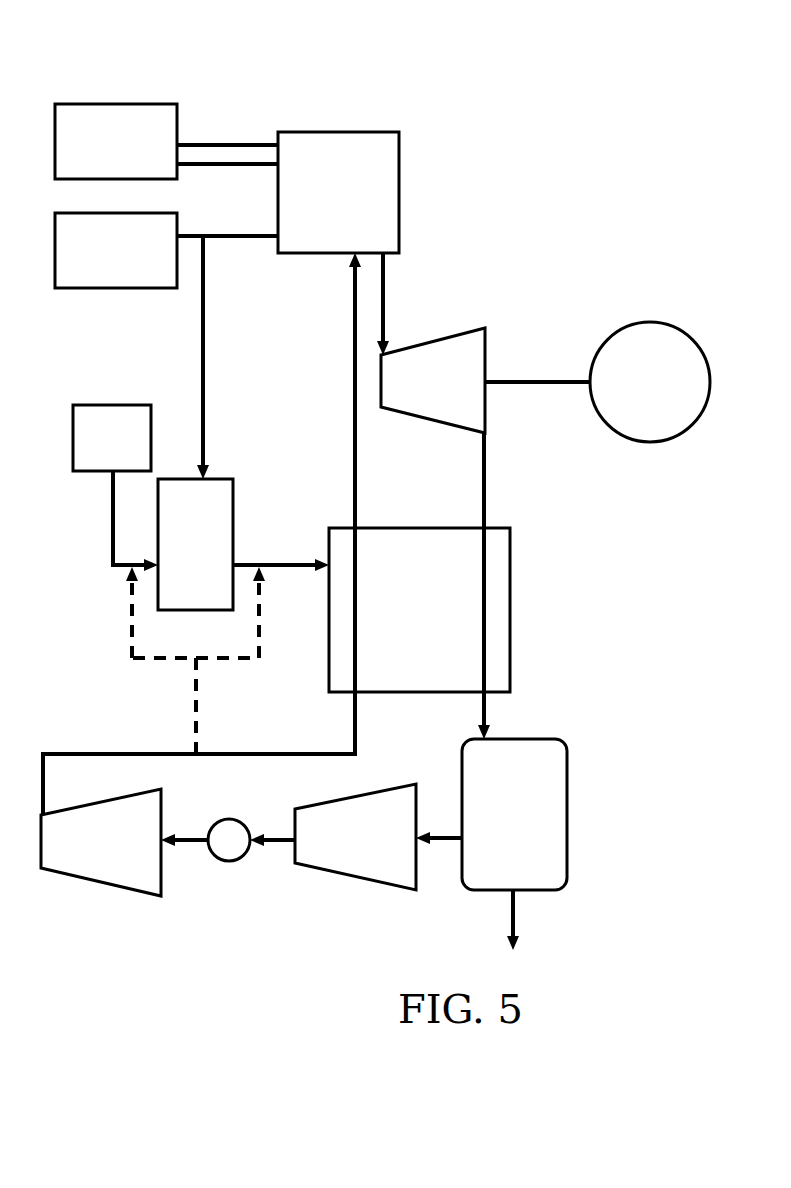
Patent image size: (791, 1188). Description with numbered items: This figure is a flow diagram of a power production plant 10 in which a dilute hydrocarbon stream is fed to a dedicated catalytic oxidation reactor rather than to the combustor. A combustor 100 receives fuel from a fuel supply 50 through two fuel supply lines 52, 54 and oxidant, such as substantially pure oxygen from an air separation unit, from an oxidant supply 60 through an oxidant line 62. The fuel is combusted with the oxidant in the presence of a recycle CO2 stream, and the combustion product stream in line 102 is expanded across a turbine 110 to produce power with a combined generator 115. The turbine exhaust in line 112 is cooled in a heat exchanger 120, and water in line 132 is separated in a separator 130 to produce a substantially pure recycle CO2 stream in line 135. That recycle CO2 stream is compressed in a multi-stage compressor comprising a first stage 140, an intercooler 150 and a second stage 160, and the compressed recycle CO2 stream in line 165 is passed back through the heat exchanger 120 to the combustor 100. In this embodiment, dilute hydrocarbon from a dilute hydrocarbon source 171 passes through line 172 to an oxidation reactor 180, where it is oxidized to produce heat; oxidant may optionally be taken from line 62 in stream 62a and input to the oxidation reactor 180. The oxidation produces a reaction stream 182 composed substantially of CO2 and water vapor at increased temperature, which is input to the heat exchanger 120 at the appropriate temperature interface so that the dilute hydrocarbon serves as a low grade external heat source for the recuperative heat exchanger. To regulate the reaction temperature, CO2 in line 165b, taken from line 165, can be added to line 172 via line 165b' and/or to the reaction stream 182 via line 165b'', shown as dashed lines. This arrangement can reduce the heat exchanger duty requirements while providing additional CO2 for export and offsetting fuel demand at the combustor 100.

The power production plant 10 is at (703, 40).
The fuel supply 50 is at (116, 141).
The fuel supply line 52 is at (227, 136).
The fuel supply line 54 is at (227, 178).
The oxidant supply 60 is at (116, 250).
The oxidant line 62 is at (227, 222).
The oxidant stream 62a is at (221, 357).
The combustor 100 is at (338, 192).
The combustion product stream line 102 is at (401, 304).
The turbine 110 is at (433, 380).
The turbine exhaust line 112 is at (467, 586).
The generator 115 is at (597, 382).
The heat exchanger 120 is at (419, 610).
The separator 130 is at (514, 814).
The water line 132 is at (531, 920).
The recycle CO2 stream line 135 is at (440, 828).
The first stage 140 is at (355, 837).
The intercooler 150 is at (228, 840).
The second stage 160 is at (101, 842).
The compressed recycle CO2 stream line 165 is at (202, 534).
The CO2 line 165b is at (195, 706).
The CO2 line 165b' is at (104, 612).
The CO2 line 165b'' is at (290, 612).
The dilute hydrocarbon source 171 is at (112, 438).
The line 172 is at (115, 521).
The oxidation reactor 180 is at (195, 544).
The reaction stream 182 is at (281, 554).